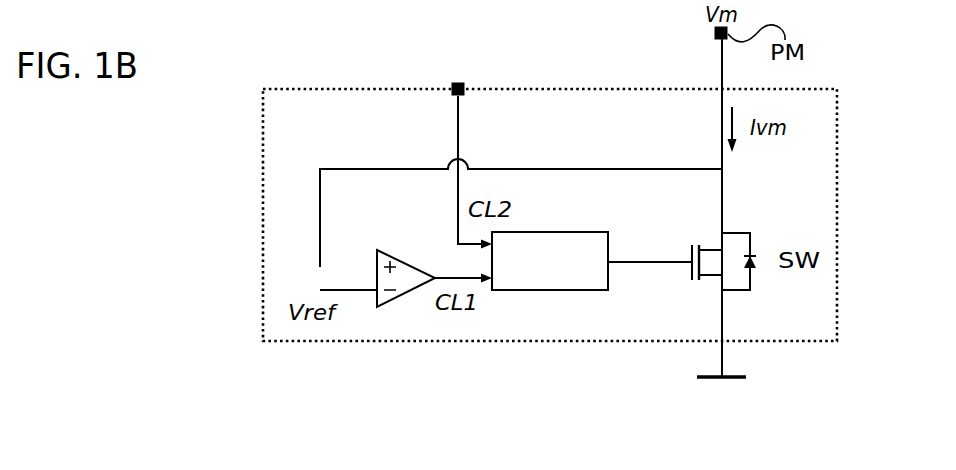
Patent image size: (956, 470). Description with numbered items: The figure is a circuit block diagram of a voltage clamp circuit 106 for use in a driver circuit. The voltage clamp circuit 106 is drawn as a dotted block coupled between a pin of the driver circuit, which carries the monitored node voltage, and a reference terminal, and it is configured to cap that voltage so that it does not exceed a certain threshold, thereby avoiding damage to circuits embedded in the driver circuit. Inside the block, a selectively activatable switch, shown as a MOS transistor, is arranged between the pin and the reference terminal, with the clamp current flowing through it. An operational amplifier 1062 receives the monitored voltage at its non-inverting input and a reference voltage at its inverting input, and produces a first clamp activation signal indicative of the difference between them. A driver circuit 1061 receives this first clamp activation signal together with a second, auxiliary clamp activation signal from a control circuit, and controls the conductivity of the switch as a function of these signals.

The voltage clamp circuit 106 is at (375, 89).
The driver circuit 1061 is at (562, 232).
The operational amplifier 1062 is at (420, 266).